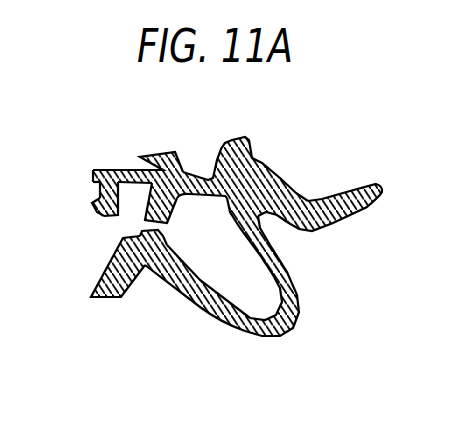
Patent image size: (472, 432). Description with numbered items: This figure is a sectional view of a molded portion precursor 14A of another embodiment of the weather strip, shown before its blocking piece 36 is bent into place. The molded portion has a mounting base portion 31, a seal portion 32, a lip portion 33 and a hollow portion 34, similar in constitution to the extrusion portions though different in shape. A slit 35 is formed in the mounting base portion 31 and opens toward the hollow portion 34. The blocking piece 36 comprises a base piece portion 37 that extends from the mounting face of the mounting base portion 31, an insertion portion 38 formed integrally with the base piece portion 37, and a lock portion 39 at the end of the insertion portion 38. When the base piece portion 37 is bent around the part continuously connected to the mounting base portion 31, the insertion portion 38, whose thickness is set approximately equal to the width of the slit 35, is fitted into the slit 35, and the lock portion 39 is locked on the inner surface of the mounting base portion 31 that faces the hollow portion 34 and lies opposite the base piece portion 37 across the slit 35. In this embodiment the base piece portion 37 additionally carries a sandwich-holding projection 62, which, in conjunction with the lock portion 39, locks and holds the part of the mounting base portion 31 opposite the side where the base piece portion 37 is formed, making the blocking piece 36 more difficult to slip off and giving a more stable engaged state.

The molded portion precursor 14A is at (290, 148).
The mounting base portion 31 is at (106, 272).
The seal portion 32 is at (276, 338).
The lip portion 33 is at (359, 181).
The hollow portion 34 is at (232, 305).
The slit 35 is at (157, 233).
The blocking piece 36 is at (106, 170).
The base piece portion 37 is at (118, 168).
The insertion portion 38 is at (99, 192).
The lock portion 39 is at (96, 205).
The sandwich-holding projection 62 is at (91, 177).